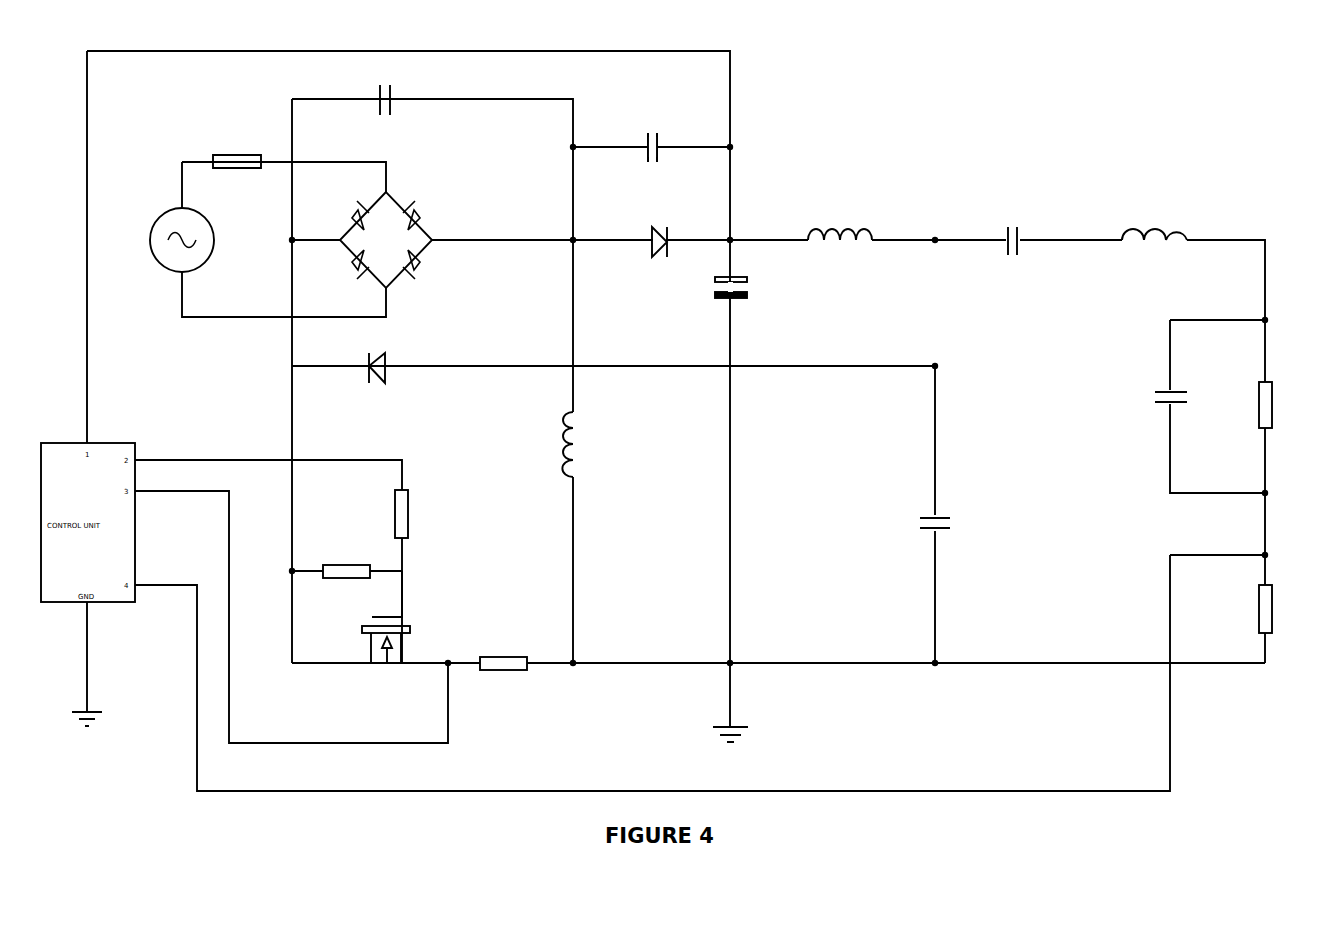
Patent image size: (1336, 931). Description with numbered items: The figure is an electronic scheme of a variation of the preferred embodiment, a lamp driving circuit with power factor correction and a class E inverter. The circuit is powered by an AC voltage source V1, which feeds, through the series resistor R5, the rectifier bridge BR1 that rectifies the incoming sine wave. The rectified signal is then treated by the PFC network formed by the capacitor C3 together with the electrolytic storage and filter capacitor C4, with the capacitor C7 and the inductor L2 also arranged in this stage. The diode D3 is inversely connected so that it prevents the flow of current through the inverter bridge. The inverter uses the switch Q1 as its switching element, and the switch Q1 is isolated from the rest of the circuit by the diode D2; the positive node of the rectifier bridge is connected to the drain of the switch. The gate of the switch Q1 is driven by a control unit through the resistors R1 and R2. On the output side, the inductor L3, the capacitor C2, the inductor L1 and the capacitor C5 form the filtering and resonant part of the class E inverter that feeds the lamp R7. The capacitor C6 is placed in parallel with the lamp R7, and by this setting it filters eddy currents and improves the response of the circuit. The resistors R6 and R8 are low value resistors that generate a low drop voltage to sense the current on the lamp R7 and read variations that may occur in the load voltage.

The AC voltage source V1 is at (196, 240).
The resistor R5 (10 ohm) R5 is at (236, 160).
The capacitor C3 is at (432, 96).
The rectifier bridge BR1 is at (390, 232).
The diode D2 is at (379, 355).
The capacitor C7 (200nF) C7 is at (650, 142).
The diode D3 is at (660, 229).
The electrolytic storage and filter capacitor C4 is at (748, 292).
The inductor L3 (375uH) L3 is at (839, 230).
The capacitor C2 (200nF) C2 is at (1009, 236).
The inductor L1 (375uH) L1 is at (1153, 230).
The capacitor C6 is at (1186, 403).
The lamp R7 is at (1280, 405).
The resistor R6 is at (1280, 609).
The capacitor C5 (15.6nF) C5 is at (955, 526).
The inductor L2 (1mH) L2 is at (584, 444).
The resistor R1 (10 ohm) R1 is at (417, 514).
The resistor R2 (1k) R2 is at (347, 567).
The switch Q1 is at (381, 637).
The resistor R8 is at (503, 653).